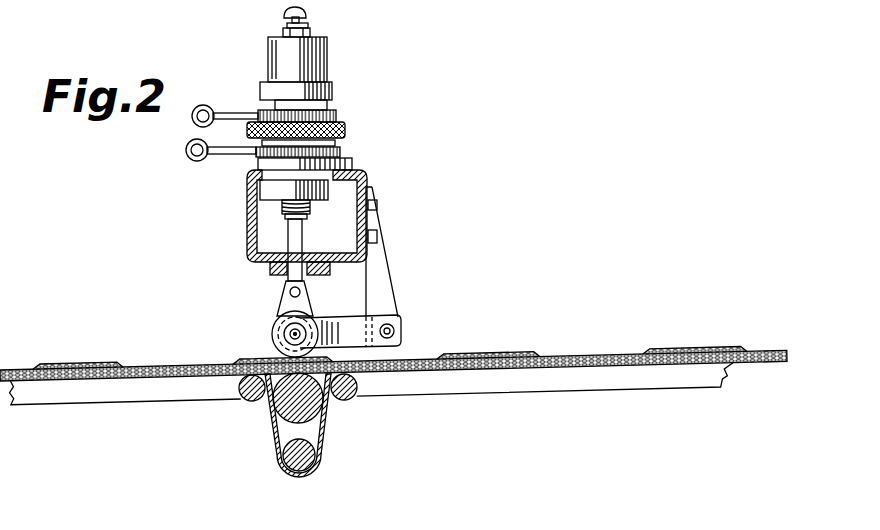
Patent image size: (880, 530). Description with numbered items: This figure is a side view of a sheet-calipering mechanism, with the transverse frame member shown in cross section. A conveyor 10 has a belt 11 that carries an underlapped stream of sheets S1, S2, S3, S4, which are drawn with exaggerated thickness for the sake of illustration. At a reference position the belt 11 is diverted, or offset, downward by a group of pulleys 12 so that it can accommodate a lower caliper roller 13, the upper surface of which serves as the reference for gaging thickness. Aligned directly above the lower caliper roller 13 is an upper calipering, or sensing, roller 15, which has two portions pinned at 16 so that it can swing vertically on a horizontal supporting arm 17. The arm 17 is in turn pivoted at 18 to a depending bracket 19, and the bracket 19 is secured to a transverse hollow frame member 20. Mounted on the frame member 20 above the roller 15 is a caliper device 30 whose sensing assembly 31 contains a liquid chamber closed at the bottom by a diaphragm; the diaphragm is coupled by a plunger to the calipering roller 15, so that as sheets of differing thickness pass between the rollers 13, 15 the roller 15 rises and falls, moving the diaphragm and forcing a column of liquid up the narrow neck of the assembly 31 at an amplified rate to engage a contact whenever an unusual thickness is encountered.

The conveyor 10 is at (394, 374).
The belt 11 is at (735, 381).
The pulleys 12 is at (253, 402).
The lower caliper roller 13 is at (288, 408).
The upper calipering roller 15 is at (271, 333).
The pin 16 is at (293, 334).
The horizontal supporting arm 17 is at (337, 327).
The pivot 18 is at (388, 316).
The depending bracket 19 is at (380, 284).
The transverse hollow frame member 20 is at (362, 175).
The caliper device 30 is at (230, 191).
The sensing assembly 31 is at (362, 116).
The sheet S1 is at (80, 370).
The sheet S2 is at (183, 370).
The sheet S3 is at (427, 370).
The sheet S4 is at (632, 370).